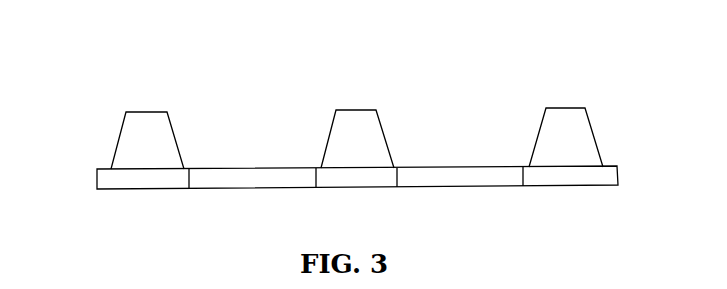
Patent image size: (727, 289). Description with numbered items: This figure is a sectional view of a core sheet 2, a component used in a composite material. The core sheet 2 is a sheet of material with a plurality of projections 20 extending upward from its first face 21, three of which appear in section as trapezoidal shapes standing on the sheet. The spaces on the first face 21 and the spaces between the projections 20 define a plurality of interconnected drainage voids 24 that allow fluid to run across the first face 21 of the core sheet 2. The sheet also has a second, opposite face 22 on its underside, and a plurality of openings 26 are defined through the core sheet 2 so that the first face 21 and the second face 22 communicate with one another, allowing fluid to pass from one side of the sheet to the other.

The electrode assembly 2 is at (598, 65).
The electrode 20 is at (328, 142).
The electrode 21 is at (97, 169).
The substrate 22 is at (553, 187).
The electrode 24 is at (524, 163).
The substrate segment 26 is at (438, 182).